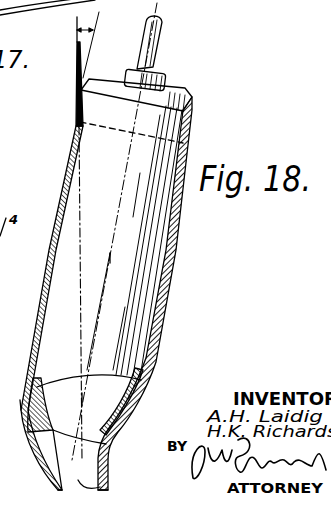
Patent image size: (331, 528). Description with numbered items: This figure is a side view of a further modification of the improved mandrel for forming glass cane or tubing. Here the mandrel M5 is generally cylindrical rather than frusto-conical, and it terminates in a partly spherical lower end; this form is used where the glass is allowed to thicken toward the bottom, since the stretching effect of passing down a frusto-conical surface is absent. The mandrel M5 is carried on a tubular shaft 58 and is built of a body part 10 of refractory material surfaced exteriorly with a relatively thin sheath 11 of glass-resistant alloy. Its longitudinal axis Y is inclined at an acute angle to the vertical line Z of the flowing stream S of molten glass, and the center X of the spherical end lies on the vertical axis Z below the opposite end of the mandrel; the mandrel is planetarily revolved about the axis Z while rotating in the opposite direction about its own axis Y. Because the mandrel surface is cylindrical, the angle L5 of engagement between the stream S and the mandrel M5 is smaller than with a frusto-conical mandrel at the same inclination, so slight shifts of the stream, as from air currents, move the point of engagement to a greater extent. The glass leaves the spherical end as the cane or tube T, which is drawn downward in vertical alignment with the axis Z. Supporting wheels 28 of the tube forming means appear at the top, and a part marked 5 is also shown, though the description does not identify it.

The angle of engagement L5 is at (85, 29).
The flowing stream S is at (73, 78).
The tubular shaft 58 is at (158, 55).
The mandrel M5 is at (191, 118).
The longitudinal axis of the mandrel Y is at (110, 262).
The vertical axis Z is at (82, 320).
The center of the spherical end portion X is at (82, 400).
The body part 10 is at (146, 389).
The sheath 11 is at (101, 440).
The glass cane or tube T is at (108, 477).
The wall 5 is at (28, 398).
The supporting wheels 28 is at (256, 9).